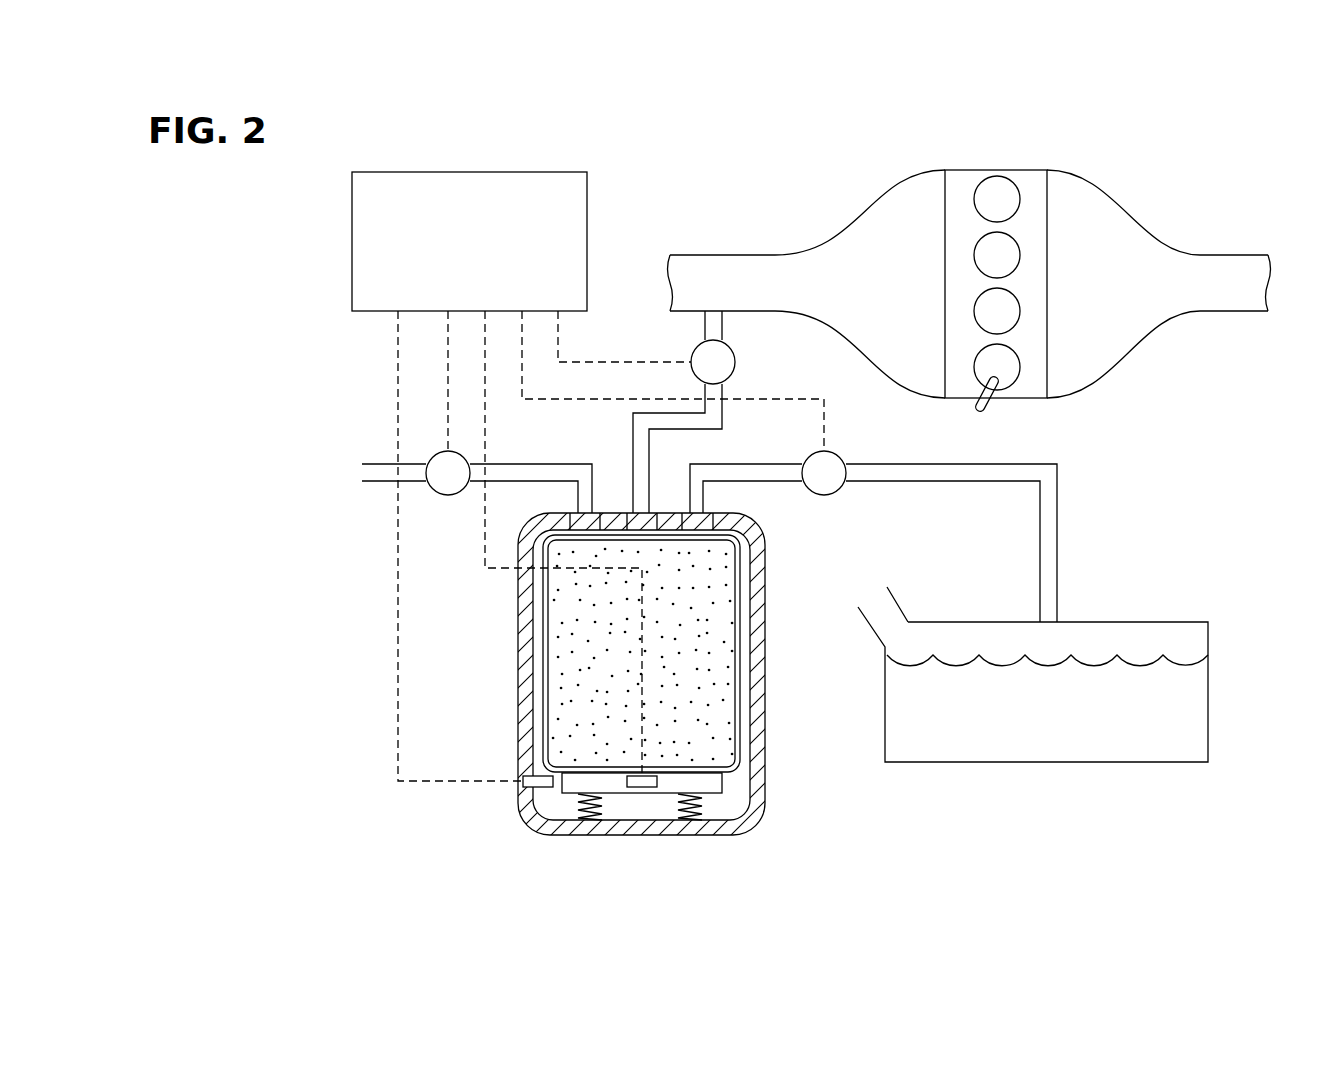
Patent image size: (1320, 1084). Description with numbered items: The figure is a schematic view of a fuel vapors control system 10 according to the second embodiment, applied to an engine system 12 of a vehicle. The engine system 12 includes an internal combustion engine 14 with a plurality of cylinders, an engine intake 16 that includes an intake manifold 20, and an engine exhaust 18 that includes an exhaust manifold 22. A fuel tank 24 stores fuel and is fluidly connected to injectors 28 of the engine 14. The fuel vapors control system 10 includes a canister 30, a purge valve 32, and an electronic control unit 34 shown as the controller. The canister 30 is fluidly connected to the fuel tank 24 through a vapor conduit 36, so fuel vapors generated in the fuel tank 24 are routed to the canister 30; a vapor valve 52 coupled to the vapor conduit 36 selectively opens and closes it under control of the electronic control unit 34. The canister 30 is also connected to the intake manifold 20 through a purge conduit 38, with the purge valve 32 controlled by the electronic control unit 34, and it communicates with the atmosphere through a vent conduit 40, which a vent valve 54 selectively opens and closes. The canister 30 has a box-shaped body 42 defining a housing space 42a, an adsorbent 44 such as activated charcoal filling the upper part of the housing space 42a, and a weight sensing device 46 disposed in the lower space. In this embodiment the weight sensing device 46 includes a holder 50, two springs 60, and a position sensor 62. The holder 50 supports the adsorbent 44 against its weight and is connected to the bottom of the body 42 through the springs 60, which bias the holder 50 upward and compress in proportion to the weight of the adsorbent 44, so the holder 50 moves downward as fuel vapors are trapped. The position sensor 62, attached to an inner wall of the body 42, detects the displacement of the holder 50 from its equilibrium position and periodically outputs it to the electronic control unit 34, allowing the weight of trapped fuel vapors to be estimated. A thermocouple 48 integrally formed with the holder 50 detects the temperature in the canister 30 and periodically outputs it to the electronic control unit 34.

The fuel vapors control system 10 is at (426, 148).
The engine system 12 is at (1177, 162).
The internal combustion engine 14 is at (1089, 160).
The engine intake 16 is at (898, 193).
The engine exhaust 18 is at (1098, 192).
The intake manifold 20 is at (892, 346).
The exhaust manifold 22 is at (1090, 362).
The fuel tank 24 is at (1208, 687).
The injectors 28 is at (988, 408).
The canister 30 is at (661, 704).
The purge valve 32 is at (735, 358).
The electronic control unit 34 is at (580, 162).
The vapor conduit 36 is at (961, 483).
The purge conduit 38 is at (633, 430).
The vent conduit 40 is at (372, 481).
The body 42 is at (754, 659).
The housing space 42a is at (726, 808).
The adsorbent 44 is at (718, 573).
The weight sensing device 46 is at (736, 775).
The thermocouple 48 is at (642, 792).
The holder 50 is at (720, 783).
The vapor valve 52 is at (814, 492).
The vent valve 54 is at (443, 490).
The springs 60 is at (598, 805).
The position sensor 62 is at (539, 798).